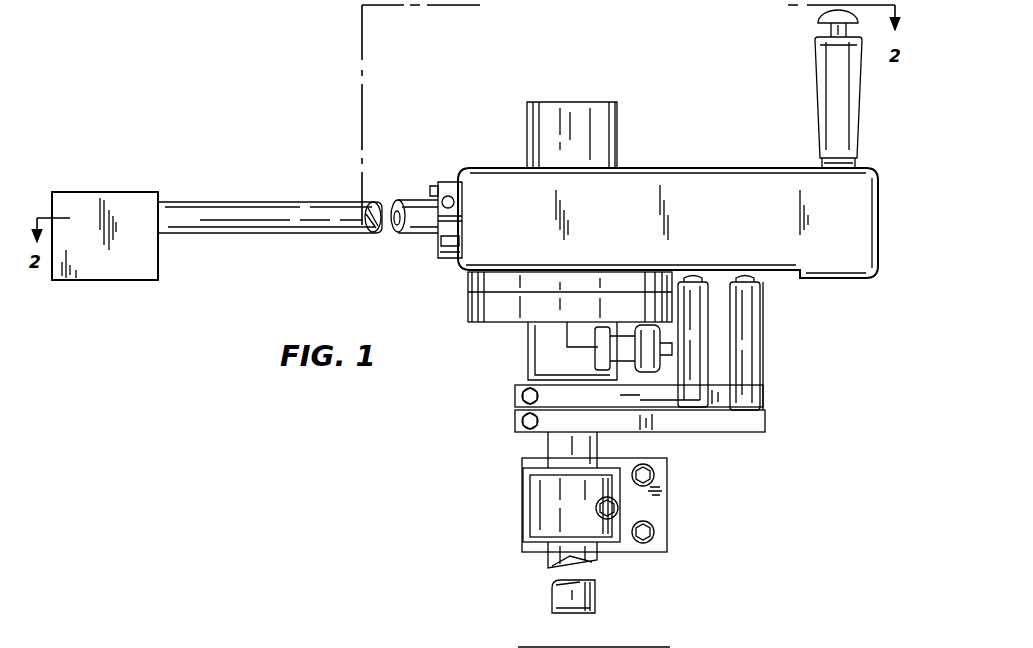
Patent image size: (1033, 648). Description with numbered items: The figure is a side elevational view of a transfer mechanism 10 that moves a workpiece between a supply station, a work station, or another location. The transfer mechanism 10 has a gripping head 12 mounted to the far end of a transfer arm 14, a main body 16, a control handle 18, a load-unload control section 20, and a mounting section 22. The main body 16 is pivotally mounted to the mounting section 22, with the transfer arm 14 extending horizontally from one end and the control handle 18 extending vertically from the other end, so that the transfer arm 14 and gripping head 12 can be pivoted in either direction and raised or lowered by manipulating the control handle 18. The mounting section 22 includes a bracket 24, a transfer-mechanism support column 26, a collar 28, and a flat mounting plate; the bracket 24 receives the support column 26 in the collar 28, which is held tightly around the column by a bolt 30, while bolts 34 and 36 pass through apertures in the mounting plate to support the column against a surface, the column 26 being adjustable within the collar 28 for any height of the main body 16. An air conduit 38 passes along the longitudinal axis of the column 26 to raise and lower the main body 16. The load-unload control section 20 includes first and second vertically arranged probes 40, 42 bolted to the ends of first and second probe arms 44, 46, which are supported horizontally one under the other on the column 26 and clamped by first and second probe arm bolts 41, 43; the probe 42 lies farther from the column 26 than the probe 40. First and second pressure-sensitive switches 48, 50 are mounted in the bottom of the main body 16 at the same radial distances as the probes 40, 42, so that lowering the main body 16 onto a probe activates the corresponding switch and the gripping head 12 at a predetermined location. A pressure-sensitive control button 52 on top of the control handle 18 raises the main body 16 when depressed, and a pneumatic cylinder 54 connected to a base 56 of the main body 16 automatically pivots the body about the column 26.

The transfer mechanism 10 is at (299, 290).
The gripping head 12 is at (124, 178).
The transfer arm 14 is at (249, 184).
The main body 16 is at (727, 158).
The control handle 18 is at (804, 79).
The load-unload control section 20 is at (780, 384).
The mounting section 22 is at (678, 519).
The bracket 24 is at (666, 528).
The transfer-mechanism support column 26 is at (560, 445).
The collar 28 is at (545, 500).
The bolt 30 is at (597, 510).
The bolt 34 is at (656, 472).
The bolt 36 is at (648, 542).
The air conduit 38 is at (598, 600).
The first probe 40 is at (702, 317).
The first probe arm bolt 41 is at (520, 396).
The second probe 42 is at (750, 334).
The second probe arm bolt 43 is at (520, 422).
The first probe arm 44 is at (572, 396).
The second probe arm 46 is at (719, 427).
The first pressure-sensitive switch 48 is at (684, 278).
The second pressure-sensitive switch 50 is at (753, 278).
The pressure-sensitive control button 52 is at (818, 16).
The pneumatic cylinder 54 is at (641, 372).
The base 56 is at (545, 340).